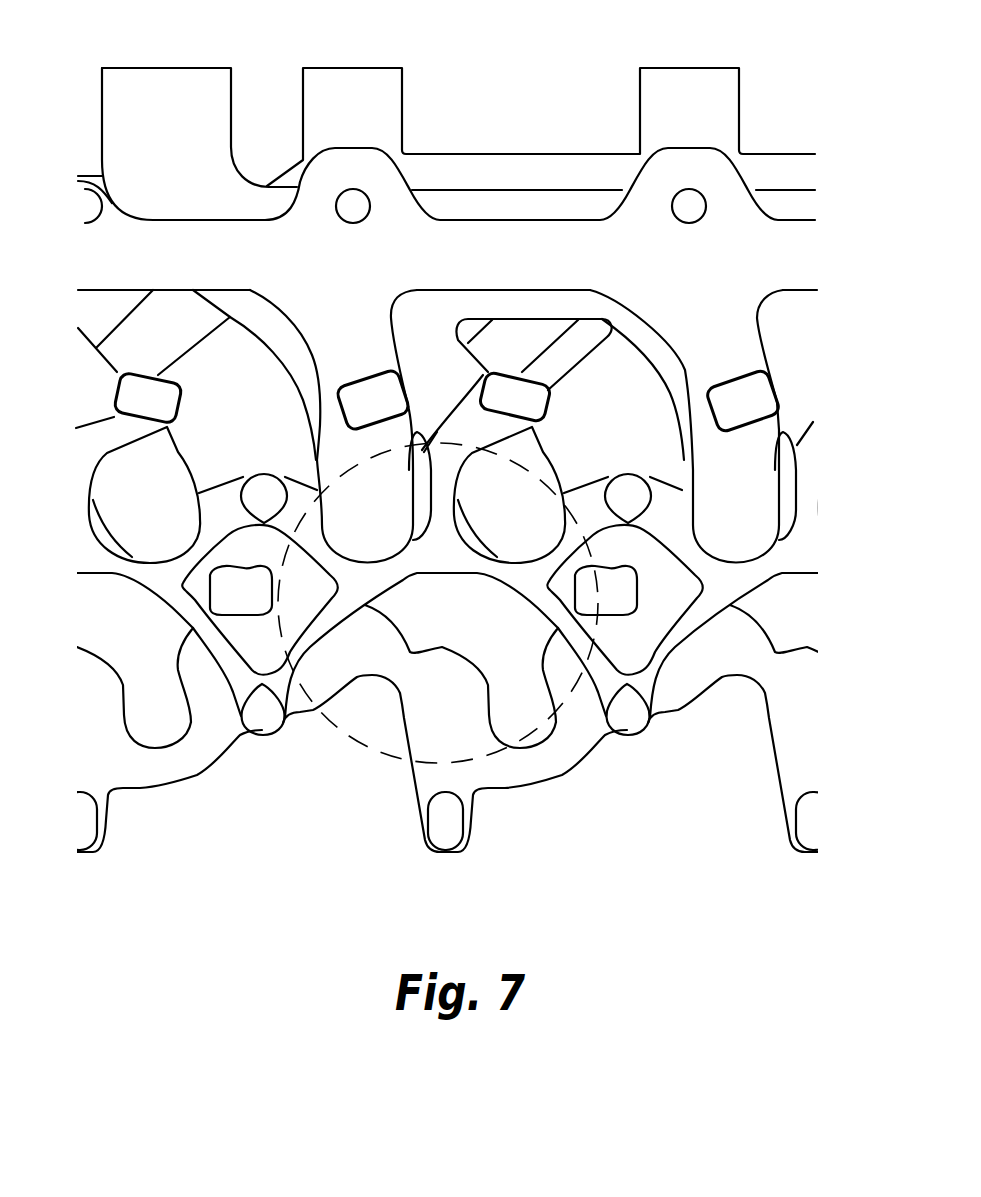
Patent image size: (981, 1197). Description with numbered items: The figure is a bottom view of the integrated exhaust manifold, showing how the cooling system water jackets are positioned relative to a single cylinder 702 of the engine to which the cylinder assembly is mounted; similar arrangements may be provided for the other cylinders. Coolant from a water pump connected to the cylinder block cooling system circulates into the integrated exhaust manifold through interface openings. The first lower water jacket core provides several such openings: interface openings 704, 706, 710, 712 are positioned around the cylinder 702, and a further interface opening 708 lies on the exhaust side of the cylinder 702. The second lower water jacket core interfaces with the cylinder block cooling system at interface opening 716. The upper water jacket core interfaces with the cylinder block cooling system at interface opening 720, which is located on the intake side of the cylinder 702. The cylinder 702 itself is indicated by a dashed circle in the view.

The cylinder 702 is at (607, 622).
The interface opening 704 is at (263, 494).
The interface opening 706 is at (263, 722).
The interface opening 708 is at (515, 398).
The interface opening 710 is at (624, 500).
The interface opening 712 is at (627, 715).
The interface opening 716 is at (367, 400).
The interface opening 720 is at (450, 829).